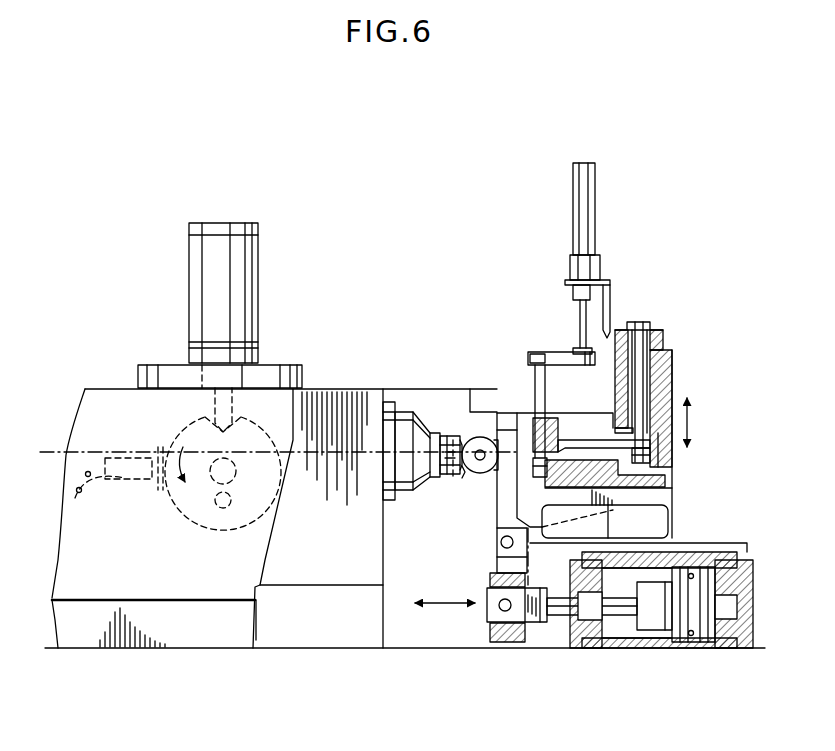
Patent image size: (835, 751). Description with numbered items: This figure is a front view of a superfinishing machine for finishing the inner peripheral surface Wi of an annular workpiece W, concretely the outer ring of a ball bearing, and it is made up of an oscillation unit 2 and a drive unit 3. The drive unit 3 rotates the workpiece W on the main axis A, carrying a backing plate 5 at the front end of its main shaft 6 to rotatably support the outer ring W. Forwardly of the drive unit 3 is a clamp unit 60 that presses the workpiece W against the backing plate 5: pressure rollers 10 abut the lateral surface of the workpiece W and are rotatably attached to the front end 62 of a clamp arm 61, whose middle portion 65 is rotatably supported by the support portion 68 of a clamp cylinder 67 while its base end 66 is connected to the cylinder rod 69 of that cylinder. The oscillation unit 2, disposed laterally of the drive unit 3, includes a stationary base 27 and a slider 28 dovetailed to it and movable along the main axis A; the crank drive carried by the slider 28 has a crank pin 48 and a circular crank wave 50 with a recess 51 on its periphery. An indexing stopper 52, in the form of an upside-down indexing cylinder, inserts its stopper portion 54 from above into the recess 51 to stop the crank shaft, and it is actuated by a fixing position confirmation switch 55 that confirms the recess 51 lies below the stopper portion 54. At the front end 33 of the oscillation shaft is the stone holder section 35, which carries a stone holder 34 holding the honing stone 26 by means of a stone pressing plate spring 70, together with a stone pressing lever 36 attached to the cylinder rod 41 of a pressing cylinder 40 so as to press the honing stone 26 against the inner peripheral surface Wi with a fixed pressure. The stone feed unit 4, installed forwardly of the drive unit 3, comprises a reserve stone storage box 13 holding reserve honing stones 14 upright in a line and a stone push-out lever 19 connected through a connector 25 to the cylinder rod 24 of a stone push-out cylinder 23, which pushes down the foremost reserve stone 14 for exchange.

The oscillation unit 2 is at (146, 652).
The drive unit 3 is at (320, 652).
The stone feed unit 4 is at (565, 262).
The backing plate 5 is at (433, 477).
The main shaft 6 is at (408, 418).
The pressure rollers 10 is at (479, 472).
The reserve stone storage box 13 is at (541, 427).
The reserve honing stones 14 is at (560, 436).
The stone push-out lever 19 is at (548, 381).
The stone push-out cylinder 23 is at (590, 189).
The cylinder rod 24 is at (585, 320).
The connector 25 is at (541, 352).
The honing stone 26 is at (452, 480).
The stationary base 27 is at (85, 633).
The slider 28 is at (100, 397).
The front end of oscillation shaft 33 is at (658, 460).
The stone holder 34 is at (614, 488).
The stone holder section 35 is at (678, 388).
The stone pressing lever 36 is at (617, 481).
The pressing cylinder 40 is at (672, 362).
The cylinder rod 41 is at (655, 453).
The crank pin 48 is at (228, 508).
The crank wave 50 is at (302, 388).
The recess 51 is at (232, 420).
The indexing stopper 52 is at (200, 257).
The stopper portion 54 is at (215, 410).
The fixing position confirmation switch 55 is at (70, 512).
The clamp unit 60 is at (628, 654).
The clamp arm 61 is at (503, 508).
The front end of clamp arm 62 is at (493, 437).
The middle portion of clamp arm 65 is at (500, 563).
The base end of clamp arm 66 is at (492, 626).
The clamp cylinder 67 is at (702, 551).
The support portion 68 is at (543, 590).
The cylinder rod 69 is at (560, 604).
The stone pressing plate spring 70 is at (489, 437).
The main axis A is at (52, 450).
The annular workpiece W is at (445, 435).
The inner peripheral surface Wi is at (453, 433).